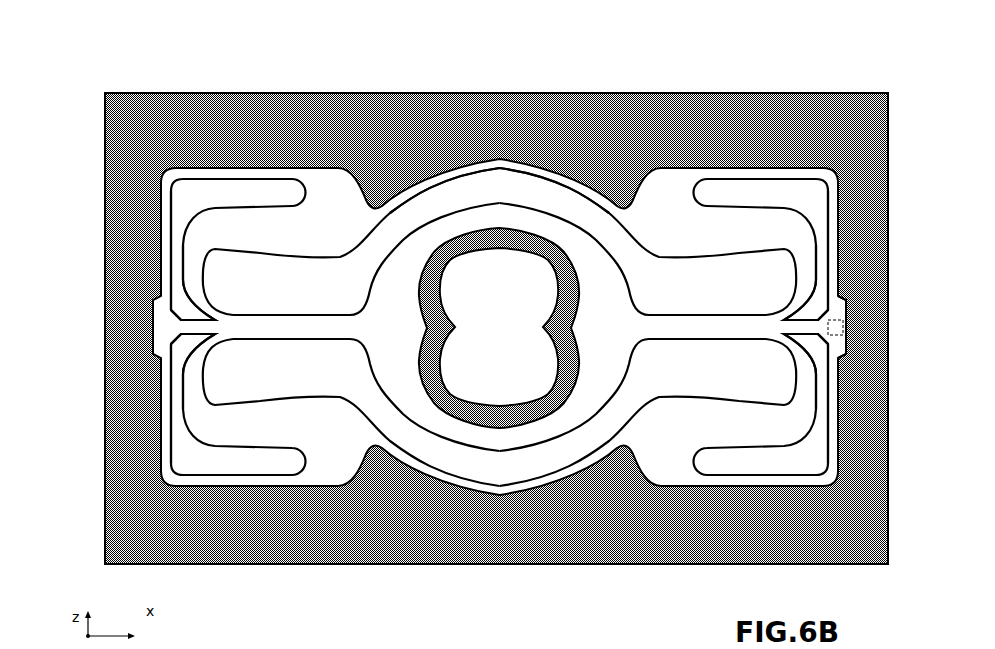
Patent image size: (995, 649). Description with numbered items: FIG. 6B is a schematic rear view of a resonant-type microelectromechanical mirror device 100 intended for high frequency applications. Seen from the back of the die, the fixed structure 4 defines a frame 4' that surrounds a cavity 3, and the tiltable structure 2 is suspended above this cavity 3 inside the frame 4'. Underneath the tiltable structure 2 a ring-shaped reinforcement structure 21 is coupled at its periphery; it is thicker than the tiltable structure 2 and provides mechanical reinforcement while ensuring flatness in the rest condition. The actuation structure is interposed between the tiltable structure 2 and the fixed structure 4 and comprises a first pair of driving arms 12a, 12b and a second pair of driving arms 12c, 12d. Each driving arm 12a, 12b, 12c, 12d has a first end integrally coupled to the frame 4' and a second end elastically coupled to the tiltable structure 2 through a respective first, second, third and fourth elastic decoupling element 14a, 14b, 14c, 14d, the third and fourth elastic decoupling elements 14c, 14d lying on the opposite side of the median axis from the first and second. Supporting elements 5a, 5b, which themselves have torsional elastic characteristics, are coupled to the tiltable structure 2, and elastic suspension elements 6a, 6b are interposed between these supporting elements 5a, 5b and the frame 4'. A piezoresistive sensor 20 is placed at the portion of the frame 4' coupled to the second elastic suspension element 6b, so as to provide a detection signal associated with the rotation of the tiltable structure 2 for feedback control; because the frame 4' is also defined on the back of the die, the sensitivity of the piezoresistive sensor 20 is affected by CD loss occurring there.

The microelectromechanical mirror device 100 is at (806, 84).
The tiltable structure 2 is at (410, 278).
The cavity 3 is at (545, 183).
The fixed structure 4 is at (508, 328).
The frame 4' is at (876, 327).
The supporting element 5a is at (283, 330).
The supporting element 5b is at (717, 330).
The elastic suspension element 6a is at (192, 321).
The elastic suspension element 6b is at (808, 333).
The driving arm 12a is at (258, 232).
The driving arm 12b is at (333, 472).
The driving arm 12c is at (688, 232).
The driving arm 12d is at (678, 472).
The first elastic decoupling element 14a is at (192, 252).
The second elastic decoupling element 14b is at (192, 412).
The third elastic decoupling element 14c is at (803, 263).
The fourth elastic decoupling element 14d is at (806, 405).
The piezoresistive sensor 20 is at (845, 333).
The reinforcement structure 21 is at (462, 427).